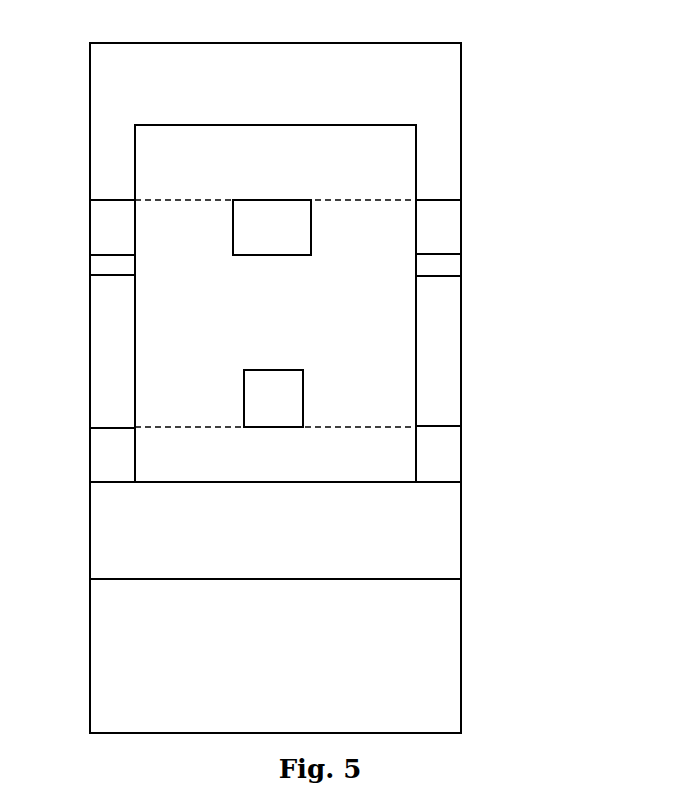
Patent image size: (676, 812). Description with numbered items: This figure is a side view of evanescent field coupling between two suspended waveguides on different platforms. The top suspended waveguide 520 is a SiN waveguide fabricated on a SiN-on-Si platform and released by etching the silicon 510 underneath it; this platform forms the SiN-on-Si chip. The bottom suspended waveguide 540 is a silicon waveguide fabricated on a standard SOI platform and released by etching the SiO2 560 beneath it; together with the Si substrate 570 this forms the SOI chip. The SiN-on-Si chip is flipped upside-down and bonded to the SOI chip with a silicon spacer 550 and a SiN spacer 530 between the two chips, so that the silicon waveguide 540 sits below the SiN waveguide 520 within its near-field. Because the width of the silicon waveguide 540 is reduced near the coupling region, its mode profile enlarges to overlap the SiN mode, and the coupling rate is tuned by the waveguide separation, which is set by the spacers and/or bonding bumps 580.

The silicon 510 is at (440, 70).
The top suspended waveguide 520 is at (259, 240).
The SiN spacer 530 is at (440, 215).
The bottom suspended waveguide 540 is at (263, 391).
The silicon spacer 550 is at (448, 364).
The SiO2 560 is at (410, 528).
The Si substrate 570 is at (407, 653).
The bonding bumps 580 is at (120, 264).